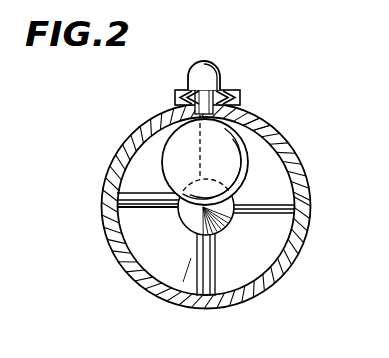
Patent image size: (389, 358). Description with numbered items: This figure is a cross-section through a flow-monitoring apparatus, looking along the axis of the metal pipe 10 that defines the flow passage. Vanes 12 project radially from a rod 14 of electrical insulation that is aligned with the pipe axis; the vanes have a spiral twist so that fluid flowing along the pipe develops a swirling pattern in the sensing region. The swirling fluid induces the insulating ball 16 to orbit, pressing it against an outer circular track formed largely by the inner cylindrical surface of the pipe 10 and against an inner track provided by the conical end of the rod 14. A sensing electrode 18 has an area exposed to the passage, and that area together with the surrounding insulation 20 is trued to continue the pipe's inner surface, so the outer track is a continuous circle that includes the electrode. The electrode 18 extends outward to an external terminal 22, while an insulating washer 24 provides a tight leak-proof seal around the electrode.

The metal pipe 10 is at (312, 202).
The vanes 12 is at (133, 165).
The rod 14 is at (187, 224).
The ball 16 is at (262, 123).
The sensing electrode 18 is at (203, 120).
The insulation 20 is at (243, 107).
The external terminal 22 is at (223, 76).
The washer 24 is at (177, 90).